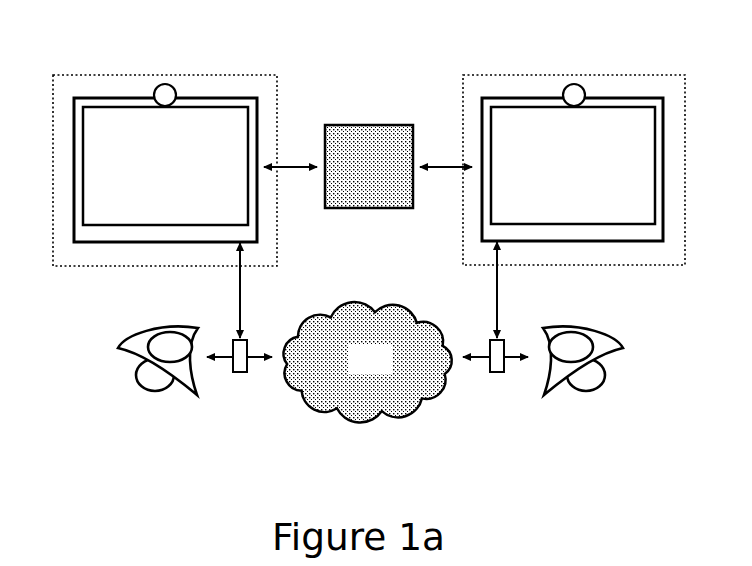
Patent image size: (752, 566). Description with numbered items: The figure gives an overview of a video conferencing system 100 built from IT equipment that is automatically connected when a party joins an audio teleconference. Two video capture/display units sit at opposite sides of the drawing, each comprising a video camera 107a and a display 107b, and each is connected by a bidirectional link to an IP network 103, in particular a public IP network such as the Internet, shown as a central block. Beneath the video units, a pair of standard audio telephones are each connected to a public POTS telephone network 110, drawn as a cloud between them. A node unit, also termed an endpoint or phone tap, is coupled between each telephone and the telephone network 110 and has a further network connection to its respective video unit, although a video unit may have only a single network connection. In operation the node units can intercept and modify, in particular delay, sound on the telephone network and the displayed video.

The video conferencing system 100 is at (131, 480).
The IP network 103 is at (366, 121).
The video camera 107a is at (160, 82).
The display 107b is at (226, 142).
The POTS telephone network 110 is at (368, 362).